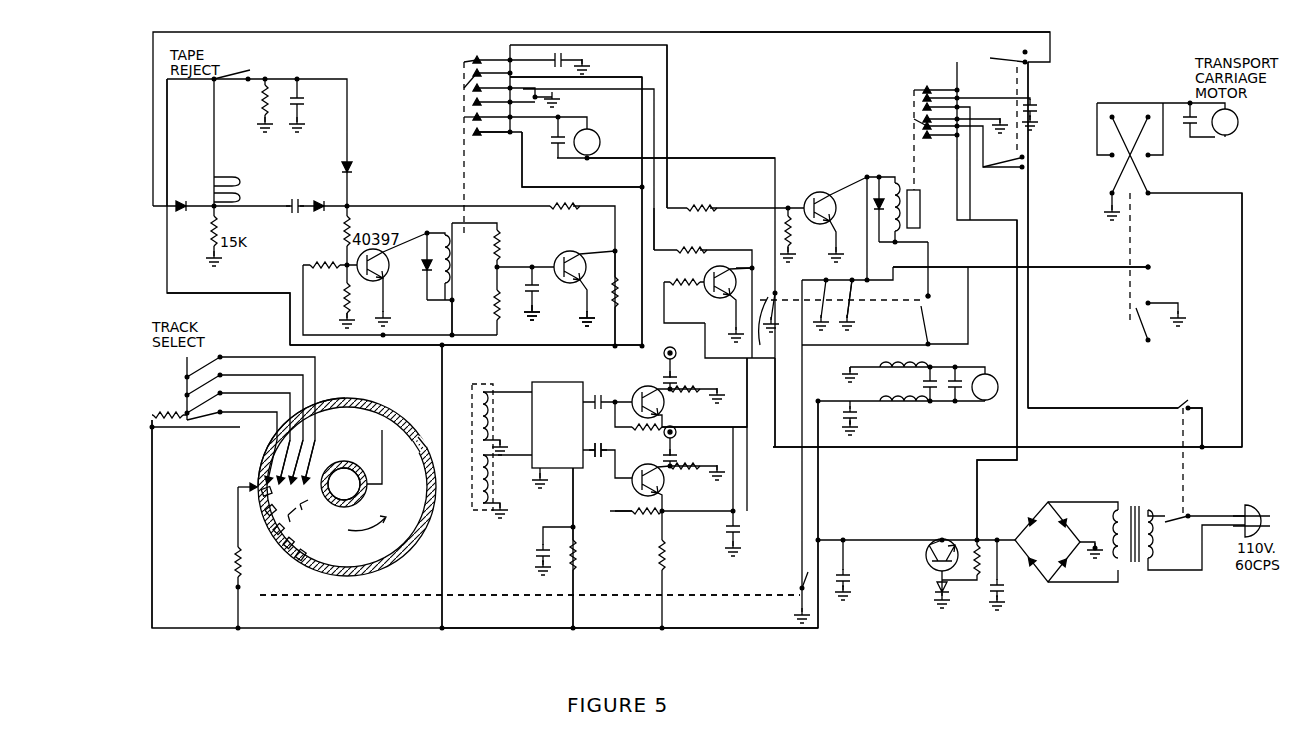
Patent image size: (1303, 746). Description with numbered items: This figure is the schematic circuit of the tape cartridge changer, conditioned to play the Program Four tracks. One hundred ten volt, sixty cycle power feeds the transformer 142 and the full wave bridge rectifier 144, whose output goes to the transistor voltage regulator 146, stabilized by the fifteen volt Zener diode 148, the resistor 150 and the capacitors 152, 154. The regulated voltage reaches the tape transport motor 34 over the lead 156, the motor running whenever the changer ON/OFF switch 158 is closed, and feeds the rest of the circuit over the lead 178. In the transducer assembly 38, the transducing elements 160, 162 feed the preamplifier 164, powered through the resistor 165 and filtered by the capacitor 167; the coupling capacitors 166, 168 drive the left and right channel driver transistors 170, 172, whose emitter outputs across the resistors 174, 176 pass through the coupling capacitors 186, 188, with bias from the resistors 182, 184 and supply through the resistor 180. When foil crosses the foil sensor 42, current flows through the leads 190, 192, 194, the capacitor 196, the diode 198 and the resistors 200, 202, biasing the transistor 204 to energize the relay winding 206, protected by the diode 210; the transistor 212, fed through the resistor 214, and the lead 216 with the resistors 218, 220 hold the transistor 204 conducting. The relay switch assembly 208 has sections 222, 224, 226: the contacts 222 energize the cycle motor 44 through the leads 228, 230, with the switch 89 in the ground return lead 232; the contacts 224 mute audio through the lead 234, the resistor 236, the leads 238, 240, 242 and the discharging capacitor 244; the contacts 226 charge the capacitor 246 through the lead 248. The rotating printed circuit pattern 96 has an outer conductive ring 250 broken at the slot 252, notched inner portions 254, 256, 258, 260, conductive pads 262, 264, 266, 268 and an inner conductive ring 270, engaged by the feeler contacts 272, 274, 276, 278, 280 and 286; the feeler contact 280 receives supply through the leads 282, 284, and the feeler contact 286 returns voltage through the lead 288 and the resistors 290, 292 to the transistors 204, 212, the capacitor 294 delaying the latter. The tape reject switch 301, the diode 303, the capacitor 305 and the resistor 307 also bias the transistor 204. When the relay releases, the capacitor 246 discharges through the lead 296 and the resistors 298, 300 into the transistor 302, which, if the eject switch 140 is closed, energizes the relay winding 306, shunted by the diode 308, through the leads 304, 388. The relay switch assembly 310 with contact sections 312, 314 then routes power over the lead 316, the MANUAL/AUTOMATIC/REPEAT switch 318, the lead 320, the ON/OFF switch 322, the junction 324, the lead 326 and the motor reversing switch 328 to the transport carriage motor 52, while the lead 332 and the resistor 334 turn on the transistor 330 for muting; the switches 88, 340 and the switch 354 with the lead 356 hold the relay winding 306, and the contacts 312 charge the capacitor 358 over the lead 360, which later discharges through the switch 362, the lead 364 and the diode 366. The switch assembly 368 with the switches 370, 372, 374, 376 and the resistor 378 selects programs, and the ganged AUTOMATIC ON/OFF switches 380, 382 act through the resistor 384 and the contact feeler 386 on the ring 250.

The lead 194 is at (212, 113).
The tape reject switch 301 is at (250, 70).
The resistor 307 is at (262, 98).
The capacitor 305 is at (300, 118).
The foil sensor 42 is at (240, 170).
The diode 303 is at (348, 160).
The diode 198 is at (318, 202).
The capacitor 196 is at (290, 212).
The resistor 200 is at (350, 228).
The diode 366 is at (182, 212).
The relay switch contacts 226 is at (464, 62).
The relay switch contacts 224 is at (464, 88).
The relay switch assembly 208 is at (440, 102).
The relay switch contacts 222 is at (464, 117).
The lead 230 is at (522, 160).
The capacitor 246 is at (545, 52).
The lead 364 is at (706, 32).
The lead 248 is at (605, 77).
The lead 296 is at (672, 80).
The ground return lead 232 is at (696, 158).
The cycle motor 44 is at (600, 145).
The resistor 220 is at (568, 202).
The lead 228 is at (642, 255).
The resistor 298 is at (712, 200).
The lead 234 is at (660, 220).
The resistor 236 is at (722, 250).
The MANUAL/AUTOMATIC/REPEAT switch 362 is at (1020, 58).
The relay switch contacts 312 is at (918, 90).
The relay switch assembly 310 is at (903, 114).
The relay switch contacts 314 is at (916, 128).
The capacitor 358 is at (1035, 104).
The relay winding 306 is at (906, 188).
The MANUAL/AUTOMATIC/REPEAT switch 318 is at (1015, 172).
The transistor 302 is at (840, 215).
The resistor 300 is at (795, 248).
The diode 308 is at (880, 245).
The transport carriage motor 52 is at (1222, 135).
The motor reversing switch 328 is at (1142, 205).
The lead 356 is at (1084, 267).
The lead 326 is at (1240, 282).
The lead 320 is at (1030, 298).
The switch 354 is at (1130, 332).
The resistor 290 is at (310, 262).
The diode 210 is at (437, 258).
The transistor 204 is at (420, 278).
The resistor 214 is at (498, 236).
The relay winding 206 is at (490, 315).
The capacitor 294 is at (526, 292).
The resistor 292 is at (530, 316).
The lead 216 is at (582, 318).
The resistor 218 is at (610, 320).
The transistor 212 is at (590, 283).
The resistor 202 is at (344, 296).
The lead 192 is at (288, 308).
The lead 288 is at (380, 356).
The lead 190 is at (440, 358).
The transducer assembly 38 is at (482, 384).
The preamplifier 164 is at (555, 382).
The coupling capacitor 166 is at (598, 394).
The coupling capacitor 186 is at (664, 356).
The resistor 174 is at (700, 376).
The left channel driver transistor 170 is at (665, 410).
The lead 242 is at (745, 438).
The resistor 182 is at (626, 425).
The coupling capacitor 168 is at (600, 476).
The coupling capacitor 188 is at (680, 438).
The resistor 176 is at (692, 478).
The right channel driver transistor 172 is at (664, 495).
The lead 238 is at (748, 452).
The lead 388 is at (790, 476).
The lead 240 is at (715, 518).
The capacitor 244 is at (726, 535).
The resistor 184 is at (614, 520).
The resistor 180 is at (658, 554).
The resistor 165 is at (575, 550).
The filter capacitor 167 is at (540, 560).
The transducing element 162 is at (482, 516).
The transducing element 160 is at (482, 388).
The lead 178 is at (712, 628).
The AUTOMATIC ON/OFF switch 382 is at (785, 612).
The AUTOMATIC ON/OFF switch 380 is at (235, 596).
The resistor 384 is at (232, 570).
The notched inner portion 254 is at (242, 590).
The notched inner portion 256 is at (280, 545).
The conductive pad 262 is at (290, 560).
The outer conductive ring 250 is at (392, 568).
The lead 282 is at (153, 544).
The notched inner portion 258 is at (270, 522).
The feeler contact 280 is at (262, 505).
The contact feeler 386 is at (236, 485).
The notched inner portion 260 is at (258, 486).
The lead 284 is at (215, 430).
The resistor 378 is at (152, 412).
The switch assembly 368 is at (167, 384).
The switch 370 is at (224, 412).
The switch 372 is at (224, 393).
The switch 374 is at (224, 375).
The switch 376 is at (224, 355).
The feeler contact 272 is at (318, 404).
The feeler contact 274 is at (316, 440).
The feeler contact 276 is at (310, 455).
The feeler contact 278 is at (315, 468).
The printed circuit pattern 96 is at (408, 476).
The feeler contact 286 is at (370, 488).
The inner conductive ring 270 is at (366, 500).
The conductive pad 268 is at (328, 508).
The conductive pad 266 is at (305, 512).
The conductive pad 264 is at (292, 522).
The non-conductive slot 252 is at (430, 438).
The resistor 334 is at (673, 278).
The transistor 330 is at (726, 305).
The switch 89 is at (786, 326).
The switch 88 is at (861, 311).
The program switch 340 is at (856, 325).
The lead 304 is at (874, 345).
The eject switch 140 is at (930, 298).
The lead 360 is at (960, 288).
The tape transport motor 34 is at (1008, 348).
The lead 316 is at (980, 466).
The lead 156 is at (820, 492).
The transistor voltage regulator 146 is at (929, 548).
The capacitor 154 is at (846, 605).
The Zener diode 148 is at (940, 604).
The resistor 150 is at (990, 590).
The capacitor 152 is at (1001, 596).
The full wave bridge rectifier 144 is at (1063, 550).
The transformer 142 is at (1152, 498).
The changer ON/OFF switch 158 is at (1165, 530).
The ON/OFF switch 322 is at (1170, 400).
The junction 324 is at (1203, 450).
The lead 332 is at (1134, 448).